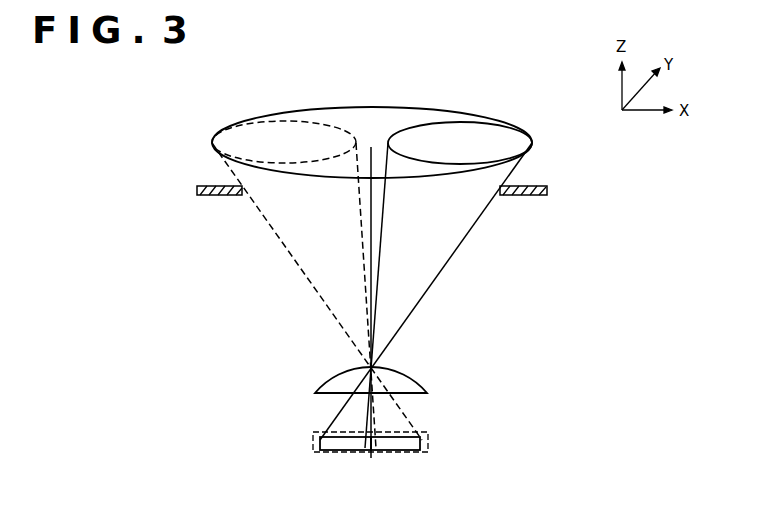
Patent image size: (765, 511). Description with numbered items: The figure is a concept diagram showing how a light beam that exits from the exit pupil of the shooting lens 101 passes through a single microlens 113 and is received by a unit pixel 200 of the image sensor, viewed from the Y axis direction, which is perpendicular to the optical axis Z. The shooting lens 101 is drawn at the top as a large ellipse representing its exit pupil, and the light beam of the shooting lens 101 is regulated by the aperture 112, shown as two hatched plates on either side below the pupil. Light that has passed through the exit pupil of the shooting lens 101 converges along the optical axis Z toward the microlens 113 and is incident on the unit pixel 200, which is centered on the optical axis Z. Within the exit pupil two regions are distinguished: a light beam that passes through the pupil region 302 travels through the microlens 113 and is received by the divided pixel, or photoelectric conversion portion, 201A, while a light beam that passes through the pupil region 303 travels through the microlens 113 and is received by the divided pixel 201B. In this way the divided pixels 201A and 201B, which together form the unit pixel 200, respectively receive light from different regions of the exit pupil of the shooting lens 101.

The shooting lens 101 is at (312, 108).
The pupil region 302 is at (478, 138).
The pupil region 303 is at (270, 143).
The aperture 112 is at (218, 195).
The microlens 113 is at (331, 374).
The unit pixel 200 is at (430, 434).
The divided pixel (photoelectric conversion portion) 201A is at (338, 442).
The divided pixel (photoelectric conversion portion) 201B is at (407, 442).
The optical axis Z is at (371, 150).